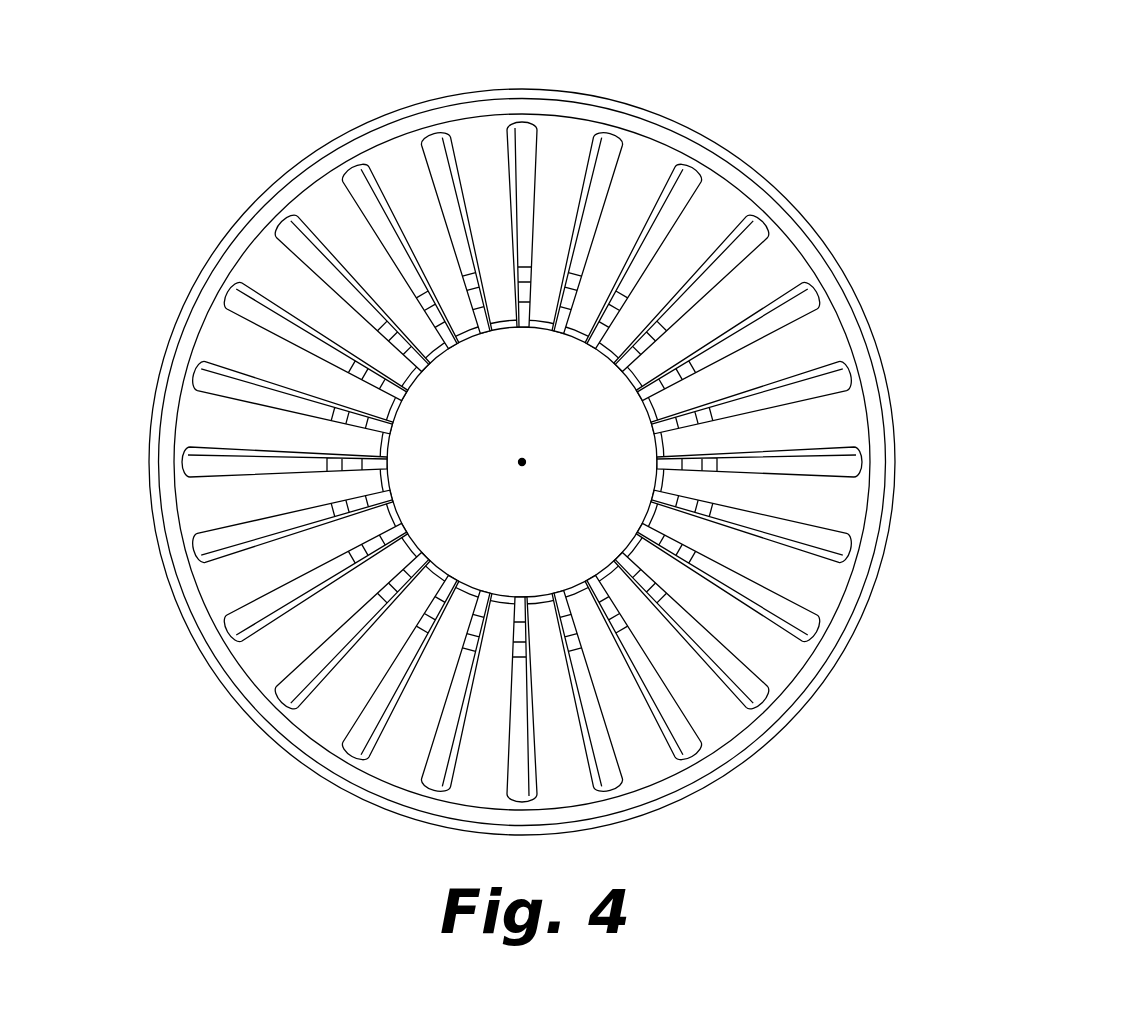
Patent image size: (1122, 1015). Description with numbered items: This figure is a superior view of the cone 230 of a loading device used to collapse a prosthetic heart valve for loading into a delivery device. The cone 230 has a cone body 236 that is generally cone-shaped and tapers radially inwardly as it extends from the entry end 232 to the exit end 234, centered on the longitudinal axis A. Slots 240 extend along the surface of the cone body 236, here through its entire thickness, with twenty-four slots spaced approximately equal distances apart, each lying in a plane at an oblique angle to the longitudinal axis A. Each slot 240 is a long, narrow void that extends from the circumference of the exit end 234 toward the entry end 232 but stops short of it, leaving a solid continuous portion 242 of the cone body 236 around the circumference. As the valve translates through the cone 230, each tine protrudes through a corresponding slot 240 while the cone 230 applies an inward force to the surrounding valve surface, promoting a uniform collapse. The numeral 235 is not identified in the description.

The cone 230 is at (156, 72).
The entry end 232 is at (718, 178).
The exit end 234 is at (655, 477).
The hub 235 is at (553, 483).
The cone body 236 is at (318, 625).
The slots 240 is at (807, 295).
The solid continuous portion 242 is at (433, 132).
The longitudinal axis A is at (520, 458).